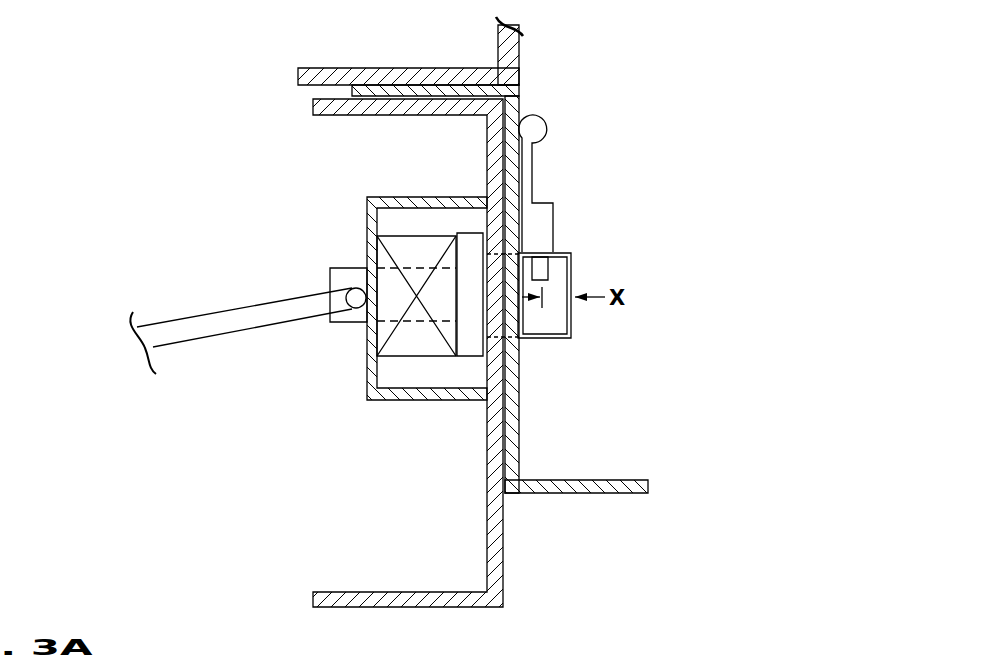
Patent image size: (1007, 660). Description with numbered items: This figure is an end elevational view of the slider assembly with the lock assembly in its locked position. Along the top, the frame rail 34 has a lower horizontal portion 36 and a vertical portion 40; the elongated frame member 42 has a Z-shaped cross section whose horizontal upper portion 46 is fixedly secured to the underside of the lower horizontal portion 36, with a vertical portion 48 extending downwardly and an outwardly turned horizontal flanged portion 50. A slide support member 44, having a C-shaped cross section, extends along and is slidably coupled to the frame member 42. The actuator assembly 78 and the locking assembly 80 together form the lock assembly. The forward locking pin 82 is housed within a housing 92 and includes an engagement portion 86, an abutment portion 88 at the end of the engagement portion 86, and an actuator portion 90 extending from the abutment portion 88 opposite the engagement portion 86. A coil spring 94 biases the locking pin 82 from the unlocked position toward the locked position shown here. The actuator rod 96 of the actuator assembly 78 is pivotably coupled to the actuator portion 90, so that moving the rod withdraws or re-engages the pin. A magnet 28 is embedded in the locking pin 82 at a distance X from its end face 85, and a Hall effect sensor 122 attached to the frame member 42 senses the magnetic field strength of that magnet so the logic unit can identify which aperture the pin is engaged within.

The magnet 28 is at (573, 255).
The frame rail 34 is at (457, 51).
The lower horizontal portion 36 is at (337, 76).
The vertical portion 40 is at (507, 53).
The frame member 42 is at (581, 329).
The slide support member 44 is at (485, 498).
The horizontal upper portion 46 is at (437, 90).
The vertical portion 48 is at (513, 445).
The horizontal flanged portion 50 is at (582, 489).
The actuator assembly 78 is at (244, 281).
The locking assembly 80 is at (626, 240).
The forward locking pin 82 is at (577, 267).
The end face 85 is at (575, 286).
The engagement portion 86 is at (555, 320).
The abutment portion 88 is at (467, 243).
The actuator portion 90 is at (350, 268).
The housing 92 is at (367, 227).
The coil spring 94 is at (415, 235).
The actuator rod 96 is at (273, 300).
The sensor 122 is at (543, 222).